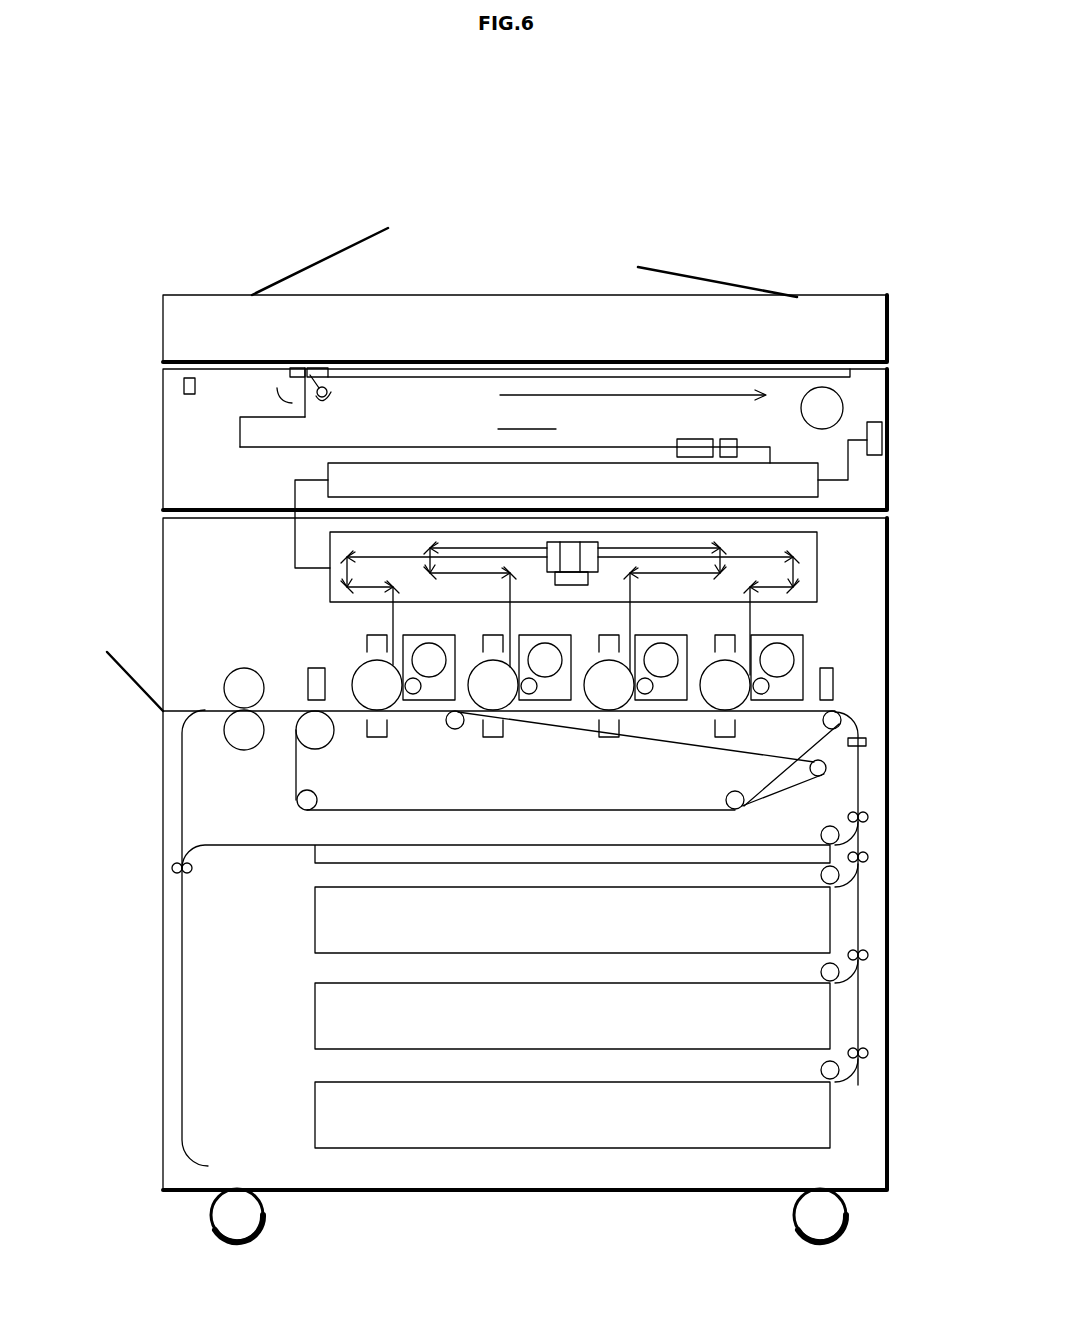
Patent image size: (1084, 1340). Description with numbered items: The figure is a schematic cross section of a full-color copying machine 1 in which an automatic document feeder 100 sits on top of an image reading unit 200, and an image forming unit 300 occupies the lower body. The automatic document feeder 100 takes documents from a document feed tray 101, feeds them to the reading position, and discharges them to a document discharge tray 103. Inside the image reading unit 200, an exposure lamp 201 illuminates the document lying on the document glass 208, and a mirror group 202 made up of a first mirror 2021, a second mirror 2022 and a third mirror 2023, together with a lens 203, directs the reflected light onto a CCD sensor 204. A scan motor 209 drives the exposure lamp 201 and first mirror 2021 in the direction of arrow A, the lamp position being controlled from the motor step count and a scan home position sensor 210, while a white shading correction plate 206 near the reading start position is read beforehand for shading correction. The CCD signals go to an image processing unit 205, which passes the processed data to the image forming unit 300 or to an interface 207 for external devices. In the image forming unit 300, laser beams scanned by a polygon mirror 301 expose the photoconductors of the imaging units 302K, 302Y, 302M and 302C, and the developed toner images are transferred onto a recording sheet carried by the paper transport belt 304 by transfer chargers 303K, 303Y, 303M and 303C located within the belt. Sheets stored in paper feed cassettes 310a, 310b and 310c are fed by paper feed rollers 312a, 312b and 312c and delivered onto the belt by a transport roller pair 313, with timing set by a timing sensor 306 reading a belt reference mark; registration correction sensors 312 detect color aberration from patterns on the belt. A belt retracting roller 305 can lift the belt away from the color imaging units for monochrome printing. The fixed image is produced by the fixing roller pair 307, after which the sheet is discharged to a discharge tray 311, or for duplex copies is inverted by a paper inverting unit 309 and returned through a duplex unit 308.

The copying machine 1 is at (420, 168).
The automatic document feeder 100 is at (506, 278).
The document feed tray 101 is at (311, 266).
The document discharge tray 103 is at (692, 277).
The image reading unit 200 is at (158, 447).
The exposure lamp 201 is at (328, 392).
The mirror group 202 is at (228, 424).
The first mirror 2021 is at (327, 405).
The second mirror 2022 is at (244, 406).
The third mirror 2023 is at (240, 448).
The lens 203 is at (695, 439).
The CCD sensor 204 is at (730, 439).
The image processing unit 205 is at (598, 492).
The white shading correction plate 206 is at (296, 368).
The interface 207 is at (872, 456).
The document glass 208 is at (455, 380).
The scan motor 209 is at (808, 423).
The scan home position sensor 210 is at (192, 400).
The image forming unit 300 is at (158, 593).
The polygon mirror 301 is at (583, 542).
The imaging unit 302K is at (410, 637).
The imaging unit 302Y is at (526, 637).
The imaging unit 302M is at (642, 637).
The imaging unit 302C is at (758, 637).
The transfer charger 303K is at (375, 740).
The transfer charger 303Y is at (491, 740).
The transfer charger 303M is at (607, 740).
The transfer charger 303C is at (723, 740).
The paper transport belt 304 is at (285, 708).
The belt retracting roller 305 is at (814, 760).
The timing sensor 306 is at (828, 668).
The fixing roller pair 307 is at (244, 752).
The duplex unit 308 is at (315, 850).
The paper inverting unit 309 is at (183, 985).
The paper feed cassette 310a is at (315, 910).
The paper feed cassette 310b is at (315, 1010).
The paper feed cassette 310c is at (315, 1105).
The discharge tray 311 is at (130, 665).
The registration correction sensors 312 is at (315, 667).
The paper feed roller 312a is at (820, 886).
The paper feed roller 312b is at (820, 982).
The paper feed roller 312c is at (820, 1080).
The transport roller pair 313 is at (848, 832).